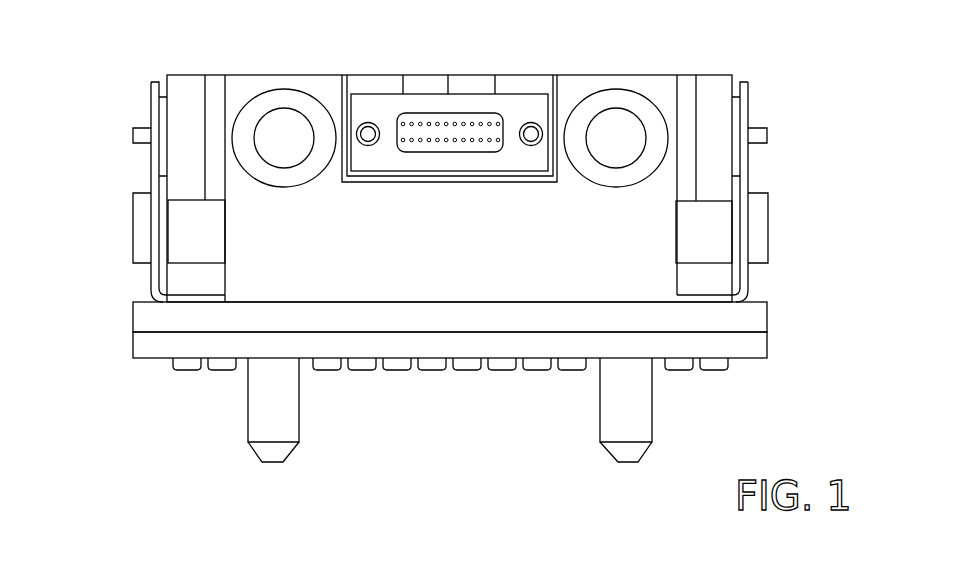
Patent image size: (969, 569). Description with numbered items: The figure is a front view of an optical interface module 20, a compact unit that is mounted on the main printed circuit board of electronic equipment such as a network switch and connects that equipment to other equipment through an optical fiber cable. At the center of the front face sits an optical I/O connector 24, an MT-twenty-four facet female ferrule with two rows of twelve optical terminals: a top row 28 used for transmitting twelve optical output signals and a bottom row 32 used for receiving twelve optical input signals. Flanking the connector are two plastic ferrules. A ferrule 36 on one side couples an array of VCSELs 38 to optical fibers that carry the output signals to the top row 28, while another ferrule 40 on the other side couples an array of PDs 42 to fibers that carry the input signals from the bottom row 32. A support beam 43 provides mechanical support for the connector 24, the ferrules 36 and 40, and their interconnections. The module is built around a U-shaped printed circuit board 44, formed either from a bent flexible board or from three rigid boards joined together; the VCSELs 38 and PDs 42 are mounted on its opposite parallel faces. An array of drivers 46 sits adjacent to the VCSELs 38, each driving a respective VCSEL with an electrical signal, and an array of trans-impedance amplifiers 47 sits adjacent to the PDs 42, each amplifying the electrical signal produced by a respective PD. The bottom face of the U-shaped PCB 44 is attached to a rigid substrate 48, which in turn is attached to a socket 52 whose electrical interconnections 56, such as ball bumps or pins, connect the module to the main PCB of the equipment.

The optical interface module 20 is at (129, 59).
The optical I/O connector 24 is at (359, 100).
The top row of terminals 28 is at (447, 113).
The bottom row of terminals 32 is at (448, 152).
The ferrule 36 is at (178, 82).
The VCSELs 38 is at (133, 135).
The ferrule 40 is at (713, 82).
The PDs 42 is at (767, 135).
The support beam 43 is at (172, 242).
The U-shaped printed circuit board 44 is at (157, 163).
The drivers 46 is at (138, 207).
The trans-impedance amplifiers 47 is at (762, 222).
The rigid substrate 48 is at (762, 318).
The socket 52 is at (762, 350).
The electrical interconnections 56 is at (498, 372).